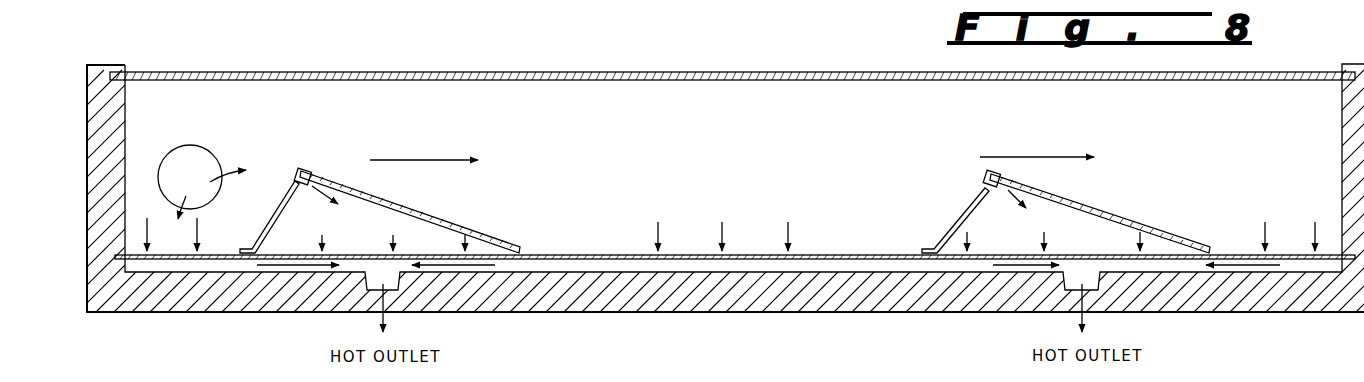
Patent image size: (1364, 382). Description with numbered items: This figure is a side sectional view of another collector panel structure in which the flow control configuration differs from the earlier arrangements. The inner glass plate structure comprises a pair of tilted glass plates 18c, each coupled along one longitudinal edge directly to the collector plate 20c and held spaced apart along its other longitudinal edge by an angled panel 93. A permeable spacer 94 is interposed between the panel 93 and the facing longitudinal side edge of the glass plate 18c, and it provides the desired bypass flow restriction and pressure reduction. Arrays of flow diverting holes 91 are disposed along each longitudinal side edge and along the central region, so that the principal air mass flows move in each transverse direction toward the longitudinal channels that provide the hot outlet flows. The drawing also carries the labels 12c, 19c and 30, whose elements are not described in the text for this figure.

The rotating drum / heat source 12c is at (190, 152).
The tilted glass plate 18c is at (463, 228).
The top heat exchange plate 19c is at (733, 72).
The collector plate 20c is at (863, 259).
The air inlet openings 30 is at (302, 258).
The flow diverting holes 91 is at (765, 258).
The angled panel 93 is at (267, 227).
The permeable spacer 94 is at (297, 175).